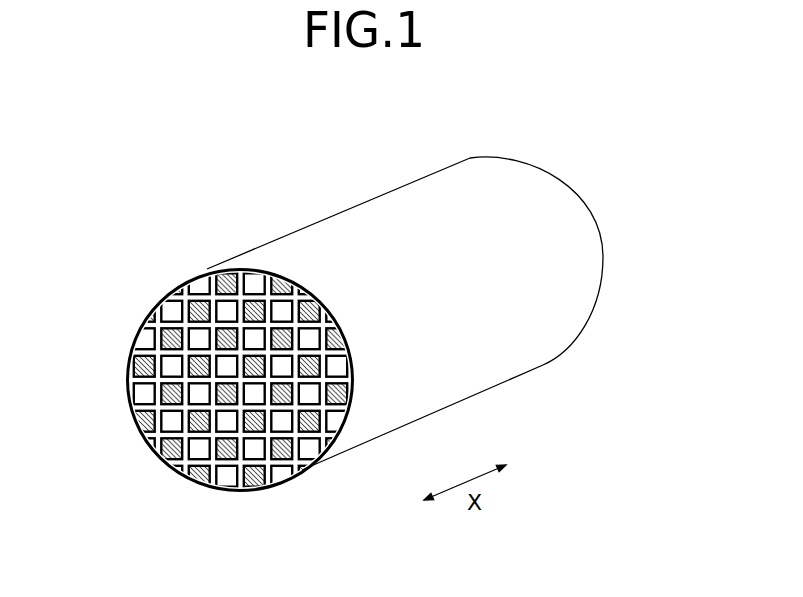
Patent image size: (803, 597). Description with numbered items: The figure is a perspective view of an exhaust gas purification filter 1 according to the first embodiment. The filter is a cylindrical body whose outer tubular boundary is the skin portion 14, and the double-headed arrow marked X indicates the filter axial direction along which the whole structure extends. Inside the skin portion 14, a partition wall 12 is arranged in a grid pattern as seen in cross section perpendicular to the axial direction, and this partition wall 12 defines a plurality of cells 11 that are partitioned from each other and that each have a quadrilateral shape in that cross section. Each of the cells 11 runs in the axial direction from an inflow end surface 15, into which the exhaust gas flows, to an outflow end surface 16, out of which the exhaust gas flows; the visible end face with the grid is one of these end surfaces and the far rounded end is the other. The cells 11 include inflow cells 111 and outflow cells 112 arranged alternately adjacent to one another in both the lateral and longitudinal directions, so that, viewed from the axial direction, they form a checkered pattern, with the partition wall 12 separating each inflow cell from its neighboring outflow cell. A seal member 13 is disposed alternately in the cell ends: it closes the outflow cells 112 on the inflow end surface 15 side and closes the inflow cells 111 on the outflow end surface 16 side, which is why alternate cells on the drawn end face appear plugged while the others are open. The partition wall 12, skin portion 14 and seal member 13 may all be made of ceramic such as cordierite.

The exhaust gas purification filter 1 is at (470, 274).
The cells 11 is at (186, 365).
The inflow cells 111 is at (200, 333).
The outflow cells 112 is at (205, 363).
The partition wall 12 is at (255, 293).
The seal member 13 is at (268, 380).
The skin portion 14 is at (500, 335).
The inflow end surface 15 is at (236, 463).
The outflow end surface 16 is at (603, 255).